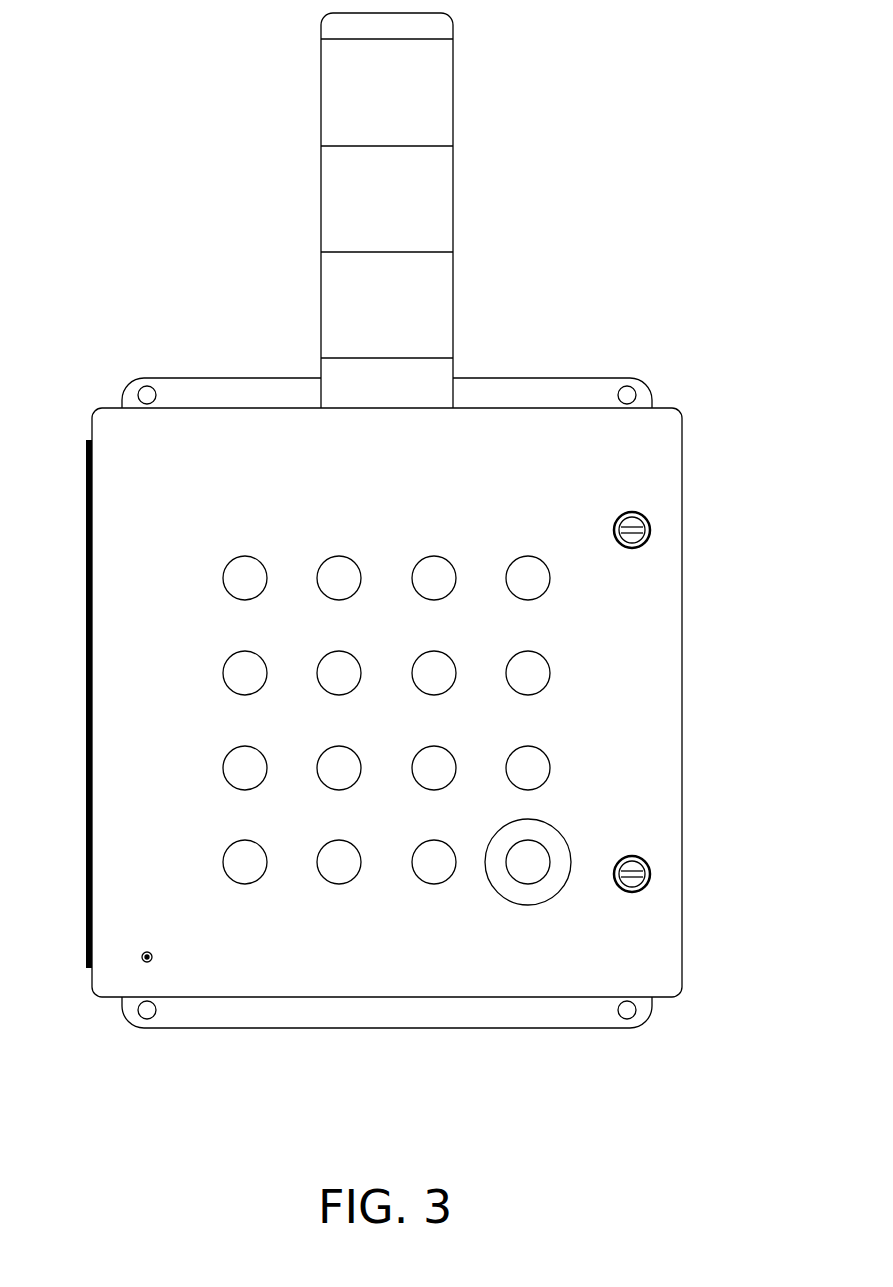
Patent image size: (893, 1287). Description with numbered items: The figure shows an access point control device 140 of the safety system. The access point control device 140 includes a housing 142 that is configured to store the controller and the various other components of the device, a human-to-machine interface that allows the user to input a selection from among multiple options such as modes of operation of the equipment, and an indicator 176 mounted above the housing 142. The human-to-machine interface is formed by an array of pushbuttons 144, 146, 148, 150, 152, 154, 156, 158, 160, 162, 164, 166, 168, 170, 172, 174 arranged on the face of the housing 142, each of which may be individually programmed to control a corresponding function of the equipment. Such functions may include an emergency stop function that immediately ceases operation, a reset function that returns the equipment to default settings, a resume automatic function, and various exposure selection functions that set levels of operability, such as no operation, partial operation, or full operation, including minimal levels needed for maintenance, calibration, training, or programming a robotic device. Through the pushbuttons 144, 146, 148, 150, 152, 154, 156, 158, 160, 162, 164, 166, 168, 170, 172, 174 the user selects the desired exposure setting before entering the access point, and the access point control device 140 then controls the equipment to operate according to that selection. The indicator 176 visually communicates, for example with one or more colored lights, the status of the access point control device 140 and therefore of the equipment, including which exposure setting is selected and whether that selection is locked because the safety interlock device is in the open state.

The access point control device 140 is at (100, 161).
The housing 142 is at (683, 458).
The pushbutton 144 is at (229, 562).
The pushbutton 146 is at (229, 657).
The pushbutton 148 is at (229, 752).
The pushbutton 150 is at (229, 846).
The pushbutton 152 is at (323, 562).
The pushbutton 154 is at (323, 657).
The pushbutton 156 is at (323, 752).
The pushbutton 158 is at (323, 846).
The pushbutton 160 is at (418, 562).
The pushbutton 162 is at (418, 657).
The pushbutton 164 is at (418, 752).
The pushbutton 166 is at (418, 846).
The pushbutton 168 is at (512, 562).
The pushbutton 170 is at (512, 657).
The pushbutton 172 is at (512, 752).
The pushbutton 174 is at (558, 828).
The indicator 176 is at (453, 116).